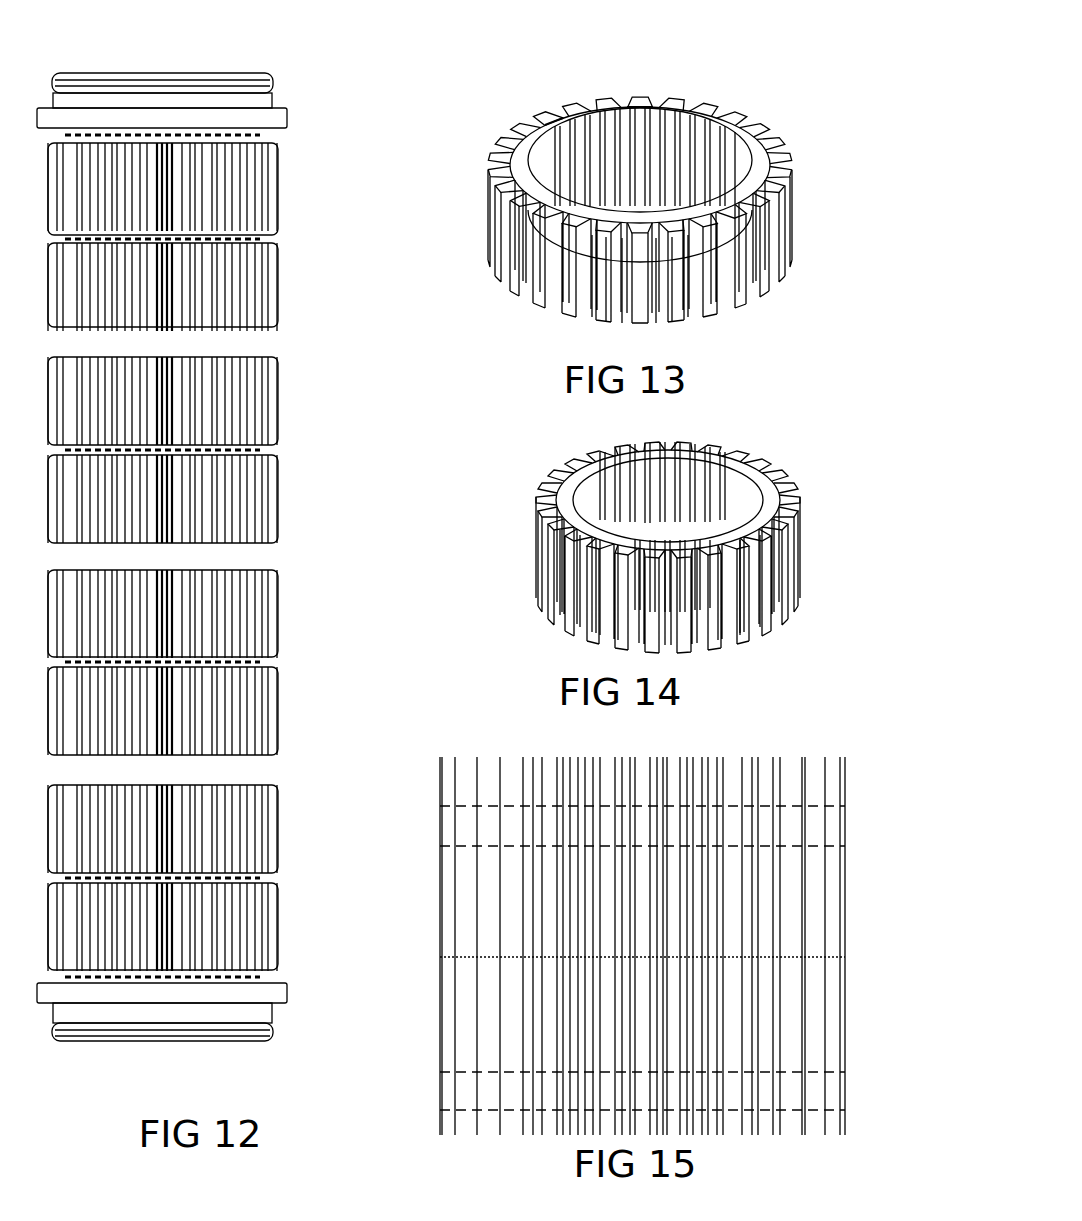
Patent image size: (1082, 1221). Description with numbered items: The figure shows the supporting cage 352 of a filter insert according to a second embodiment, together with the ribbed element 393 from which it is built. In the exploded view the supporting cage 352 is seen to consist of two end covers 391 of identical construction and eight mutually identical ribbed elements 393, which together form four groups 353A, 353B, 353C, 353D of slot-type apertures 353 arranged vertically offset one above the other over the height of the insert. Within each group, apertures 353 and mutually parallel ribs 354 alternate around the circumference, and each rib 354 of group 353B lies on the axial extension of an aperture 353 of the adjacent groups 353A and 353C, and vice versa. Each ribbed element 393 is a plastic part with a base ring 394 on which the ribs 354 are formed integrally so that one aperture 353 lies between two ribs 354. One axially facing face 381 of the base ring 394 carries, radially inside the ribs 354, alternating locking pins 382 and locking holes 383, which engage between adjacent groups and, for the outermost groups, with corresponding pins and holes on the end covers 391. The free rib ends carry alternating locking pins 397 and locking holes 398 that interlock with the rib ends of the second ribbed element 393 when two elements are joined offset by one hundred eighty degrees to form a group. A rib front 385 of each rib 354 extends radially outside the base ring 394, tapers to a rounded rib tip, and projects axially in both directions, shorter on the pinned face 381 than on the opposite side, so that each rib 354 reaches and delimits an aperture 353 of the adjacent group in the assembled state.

In FIG. 12, the supporting cage 352 is at (318, 128).
In FIG. 12, the end cover 391 is at (258, 72).
In FIG. 12, the ribbed element 393 is at (290, 378).
In FIG. 12, the slot-type aperture 353 is at (155, 210).
In FIG. 13, the slot-type aperture 353 is at (640, 307).
In FIG. 14, the slot-type aperture 353 is at (685, 592).
In FIG. 15, the slot-type aperture 353 is at (642, 885).
In FIG. 12, the rib 354 is at (122, 207).
In FIG. 13, the rib 354 is at (762, 232).
In FIG. 14, the rib 354 is at (585, 573).
In FIG. 15, the rib 354 is at (640, 780).
In FIG. 12, the first group of apertures 353A is at (313, 212).
In FIG. 15, the first group of apertures 353A is at (410, 765).
In FIG. 12, the second group of apertures 353B is at (313, 456).
In FIG. 15, the second group of apertures 353B is at (415, 1000).
In FIG. 12, the third group of apertures 353C is at (295, 648).
In FIG. 15, the third group of apertures 353C is at (410, 1123).
In FIG. 12, the fourth group of apertures 353D is at (295, 887).
In FIG. 13, the face 381 is at (665, 97).
In FIG. 13, the locking pin 382 is at (556, 105).
In FIG. 13, the locking hole 383 is at (638, 100).
In FIG. 13, the rib front 385 is at (545, 100).
In FIG. 13, the base ring 394 is at (553, 127).
In FIG. 14, the base ring 394 is at (712, 612).
In FIG. 14, the locking pin 397 is at (718, 450).
In FIG. 14, the locking hole 398 is at (672, 455).